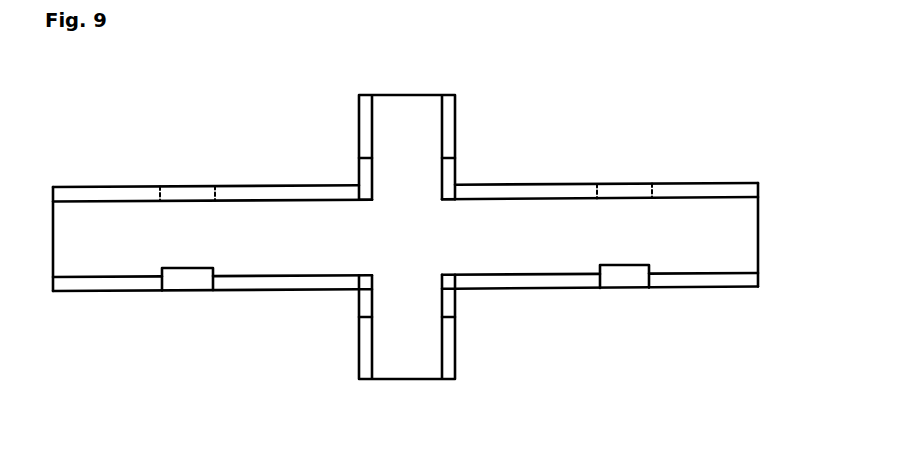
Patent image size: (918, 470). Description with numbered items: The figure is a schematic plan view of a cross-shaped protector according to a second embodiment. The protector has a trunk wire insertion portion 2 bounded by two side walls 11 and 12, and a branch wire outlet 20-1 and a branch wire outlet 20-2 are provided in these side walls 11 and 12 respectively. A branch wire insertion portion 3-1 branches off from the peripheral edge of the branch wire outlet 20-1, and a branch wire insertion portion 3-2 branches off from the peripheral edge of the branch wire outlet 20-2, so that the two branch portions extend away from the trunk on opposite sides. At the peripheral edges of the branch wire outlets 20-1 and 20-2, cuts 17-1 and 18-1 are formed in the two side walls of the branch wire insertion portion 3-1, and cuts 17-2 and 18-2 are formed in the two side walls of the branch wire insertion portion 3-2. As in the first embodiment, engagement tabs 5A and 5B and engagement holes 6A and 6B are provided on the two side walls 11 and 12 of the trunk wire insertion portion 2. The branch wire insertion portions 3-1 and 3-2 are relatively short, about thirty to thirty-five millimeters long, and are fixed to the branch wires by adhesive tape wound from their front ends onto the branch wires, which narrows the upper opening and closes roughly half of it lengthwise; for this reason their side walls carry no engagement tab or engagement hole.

The trunk wire insertion portion 2 is at (405, 219).
The side wall 12 is at (405, 152).
The side wall 11 is at (405, 322).
The engagement hole 6A is at (183, 186).
The engagement hole 6B is at (623, 183).
The engagement tab 5A is at (186, 272).
The engagement tab 5B is at (625, 270).
The branch wire insertion portion 3-2 is at (422, 119).
The branch wire insertion portion 3-1 is at (405, 357).
The cut 18-2 is at (362, 177).
The cut 17-2 is at (448, 184).
The branch wire outlet 20-2 is at (415, 187).
The cut 18-1 is at (358, 300).
The cut 17-1 is at (448, 298).
The branch wire outlet 20-1 is at (398, 278).